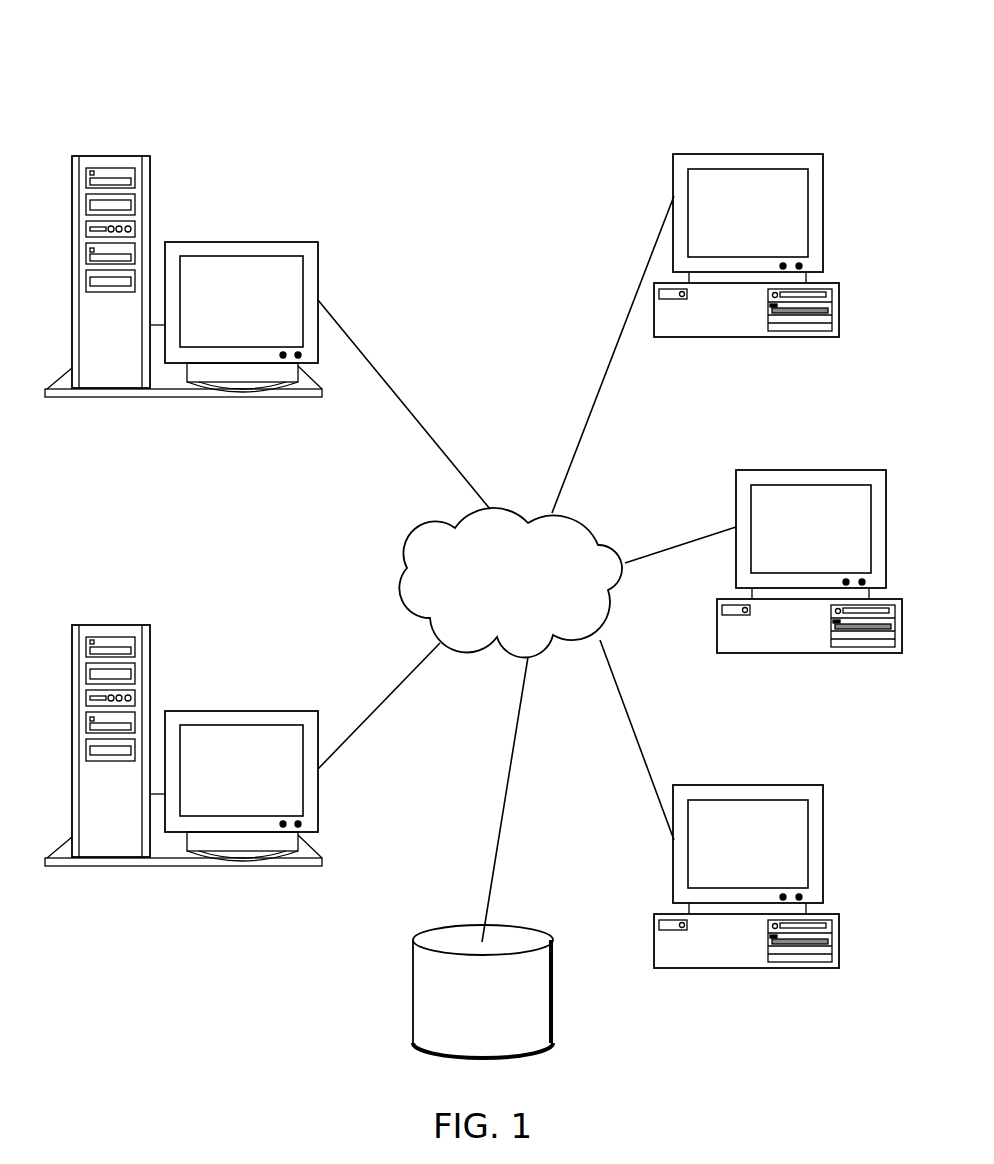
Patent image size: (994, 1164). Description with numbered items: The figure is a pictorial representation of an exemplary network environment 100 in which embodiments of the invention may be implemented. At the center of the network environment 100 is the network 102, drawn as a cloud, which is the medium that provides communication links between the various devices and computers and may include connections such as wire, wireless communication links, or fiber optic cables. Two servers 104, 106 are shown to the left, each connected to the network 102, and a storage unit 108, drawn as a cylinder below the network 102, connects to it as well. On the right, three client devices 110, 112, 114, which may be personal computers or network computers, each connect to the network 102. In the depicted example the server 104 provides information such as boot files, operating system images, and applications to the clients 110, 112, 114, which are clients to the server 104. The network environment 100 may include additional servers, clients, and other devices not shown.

The network environment 100 is at (757, 66).
The network 102 is at (536, 612).
The server 104 is at (30, 232).
The server 106 is at (183, 772).
The storage unit 108 is at (462, 1034).
The client device 110 is at (746, 272).
The client device 112 is at (809, 588).
The client device 114 is at (746, 903).